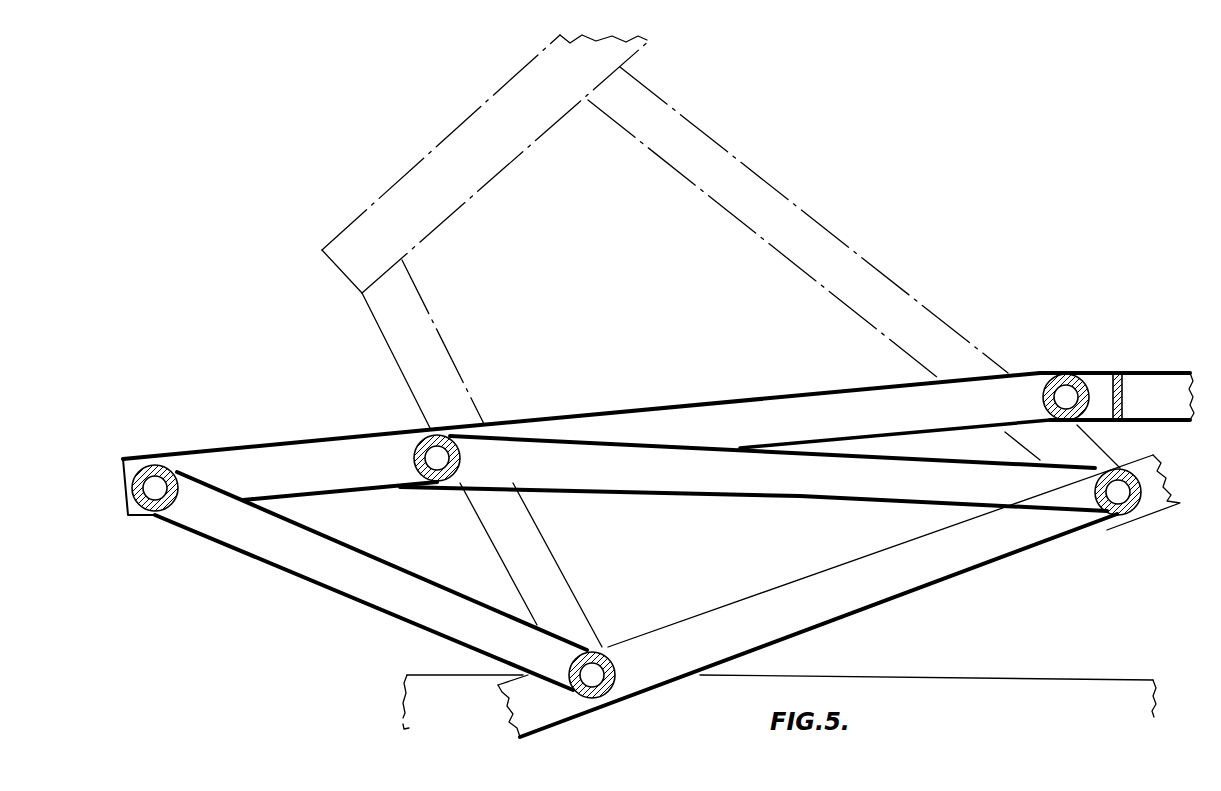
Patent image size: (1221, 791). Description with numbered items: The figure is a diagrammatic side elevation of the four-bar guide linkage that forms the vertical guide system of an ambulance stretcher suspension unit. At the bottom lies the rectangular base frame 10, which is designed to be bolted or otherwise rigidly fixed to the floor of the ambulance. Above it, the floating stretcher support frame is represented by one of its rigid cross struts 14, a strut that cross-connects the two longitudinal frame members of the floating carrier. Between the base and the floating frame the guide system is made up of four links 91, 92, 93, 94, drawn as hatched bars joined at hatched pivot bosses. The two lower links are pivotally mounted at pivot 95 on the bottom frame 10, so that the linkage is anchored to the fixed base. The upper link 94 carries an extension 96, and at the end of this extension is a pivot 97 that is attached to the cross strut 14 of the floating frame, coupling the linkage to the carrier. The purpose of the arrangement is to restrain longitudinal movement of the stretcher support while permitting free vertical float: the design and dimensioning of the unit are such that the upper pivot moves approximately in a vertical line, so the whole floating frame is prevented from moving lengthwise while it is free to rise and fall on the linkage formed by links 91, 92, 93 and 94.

The base frame 10 is at (866, 688).
The cross strut 14 is at (1147, 373).
The link 91 is at (308, 567).
The link 92 is at (959, 556).
The link 93 is at (774, 488).
The upper link 94 is at (272, 466).
The pivot 95 is at (618, 676).
The extension 96 is at (730, 410).
The pivot 97 is at (1067, 375).